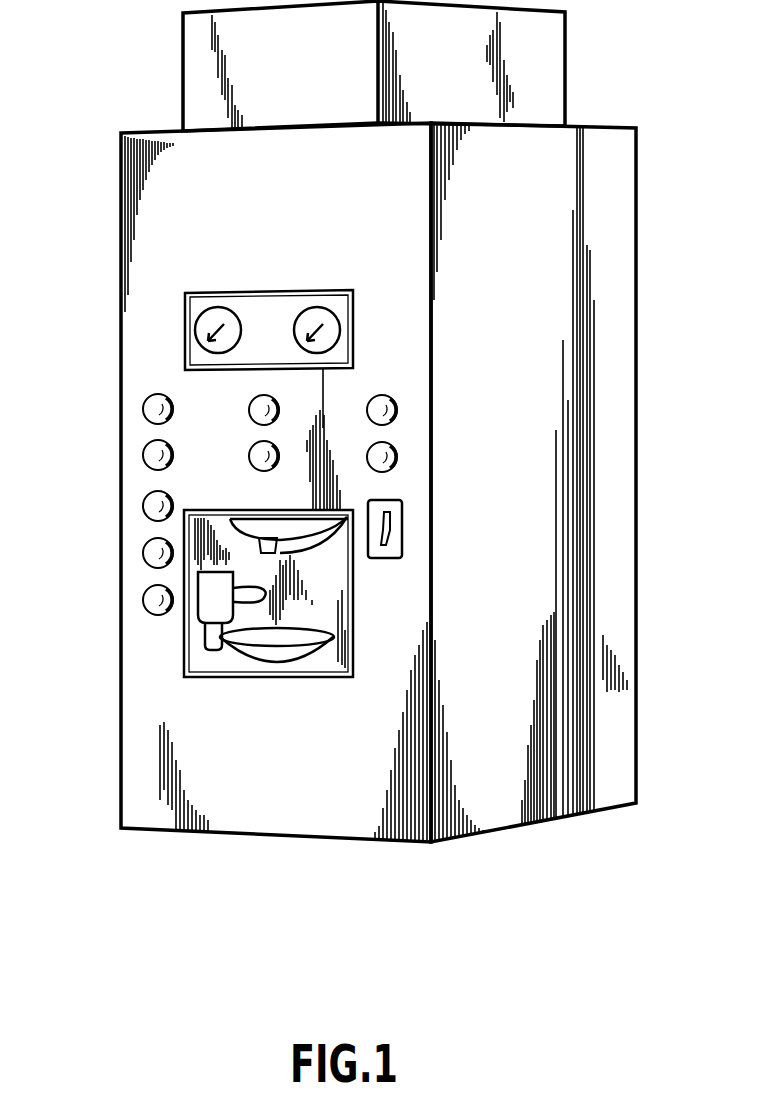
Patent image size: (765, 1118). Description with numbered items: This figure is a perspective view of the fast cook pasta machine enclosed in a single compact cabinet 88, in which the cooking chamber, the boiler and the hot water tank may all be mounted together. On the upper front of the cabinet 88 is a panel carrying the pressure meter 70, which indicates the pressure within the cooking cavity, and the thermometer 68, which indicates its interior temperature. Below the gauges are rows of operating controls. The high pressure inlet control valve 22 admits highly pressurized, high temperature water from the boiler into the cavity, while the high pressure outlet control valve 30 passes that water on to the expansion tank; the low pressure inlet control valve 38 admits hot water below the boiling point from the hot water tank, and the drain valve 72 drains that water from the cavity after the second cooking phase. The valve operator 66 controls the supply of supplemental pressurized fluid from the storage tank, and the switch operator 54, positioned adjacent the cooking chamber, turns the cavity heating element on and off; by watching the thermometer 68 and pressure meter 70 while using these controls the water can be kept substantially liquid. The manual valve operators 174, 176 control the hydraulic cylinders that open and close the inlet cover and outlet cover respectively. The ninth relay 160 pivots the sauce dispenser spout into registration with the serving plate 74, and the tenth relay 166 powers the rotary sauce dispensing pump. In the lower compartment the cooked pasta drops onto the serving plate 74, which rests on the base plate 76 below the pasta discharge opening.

The high pressure inlet control valve 22 is at (143, 409).
The high pressure outlet control valve 30 is at (249, 410).
The low pressure inlet control valve 38 is at (143, 455).
The switch operator 54 is at (386, 560).
The valve operator 66 is at (143, 506).
The thermometer 68 is at (338, 330).
The pressure meter 70 is at (196, 329).
The drain valve 72 is at (249, 456).
The serving plate 74 is at (283, 645).
The base plate 76 is at (226, 662).
The compact cabinet 88 is at (620, 418).
The ninth relay 160 is at (143, 553).
The tenth relay 166 is at (143, 600).
The manual valve operator 174 is at (397, 410).
The manual valve operator 176 is at (397, 457).